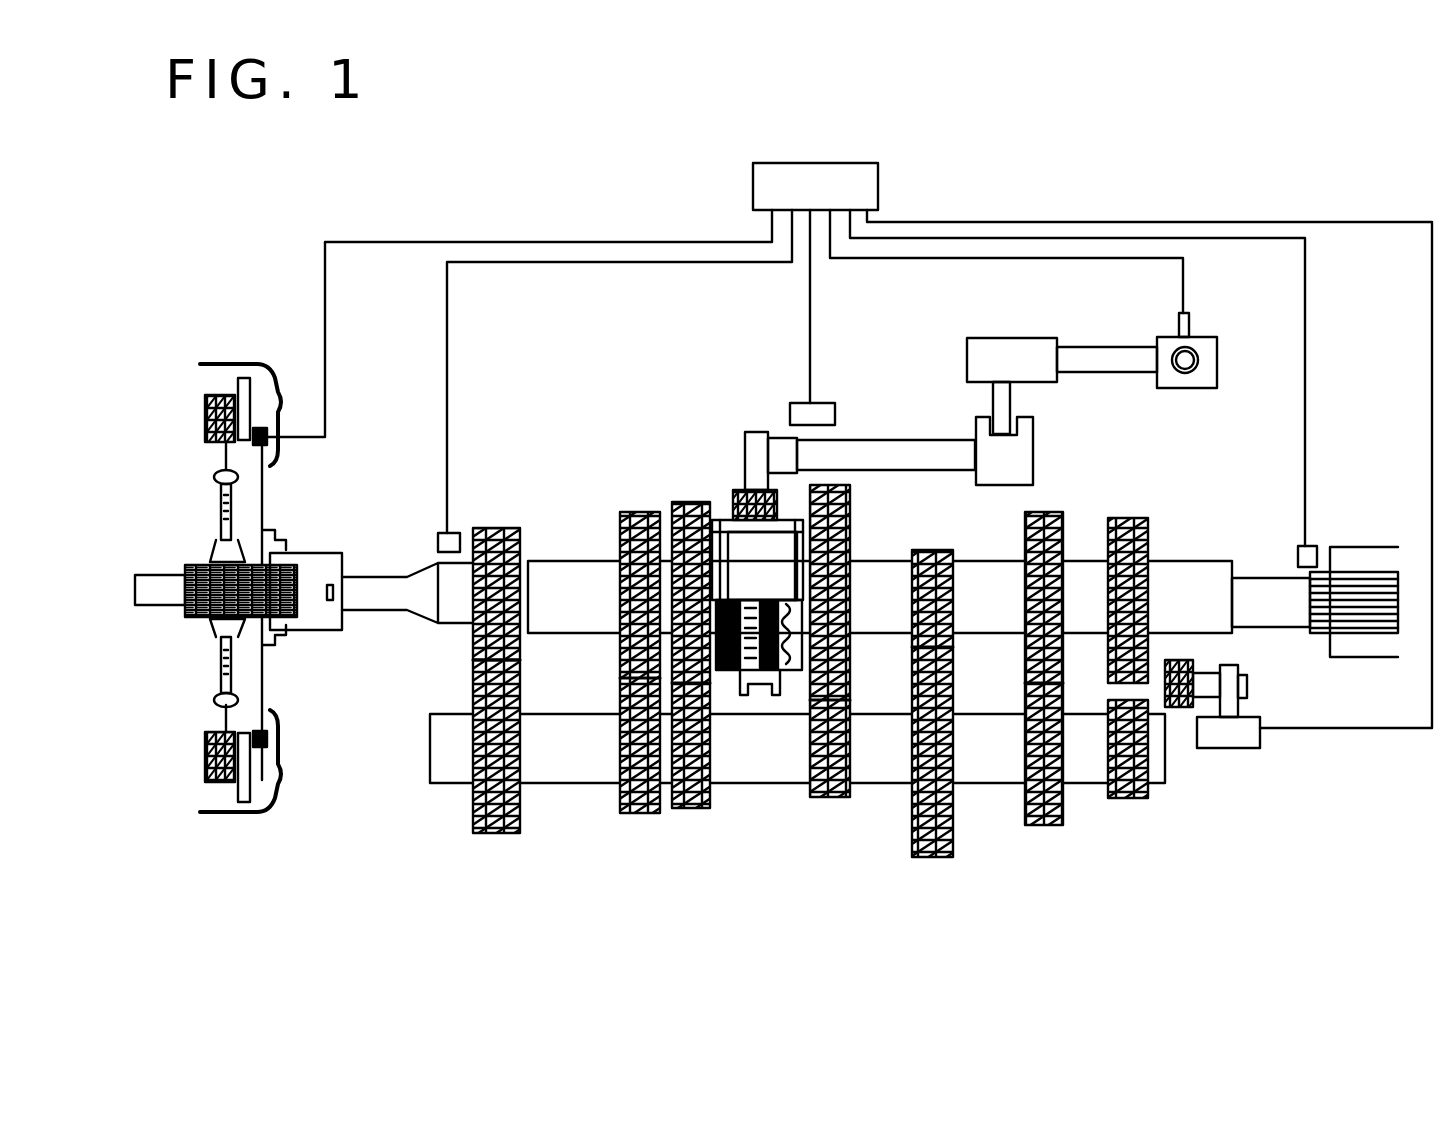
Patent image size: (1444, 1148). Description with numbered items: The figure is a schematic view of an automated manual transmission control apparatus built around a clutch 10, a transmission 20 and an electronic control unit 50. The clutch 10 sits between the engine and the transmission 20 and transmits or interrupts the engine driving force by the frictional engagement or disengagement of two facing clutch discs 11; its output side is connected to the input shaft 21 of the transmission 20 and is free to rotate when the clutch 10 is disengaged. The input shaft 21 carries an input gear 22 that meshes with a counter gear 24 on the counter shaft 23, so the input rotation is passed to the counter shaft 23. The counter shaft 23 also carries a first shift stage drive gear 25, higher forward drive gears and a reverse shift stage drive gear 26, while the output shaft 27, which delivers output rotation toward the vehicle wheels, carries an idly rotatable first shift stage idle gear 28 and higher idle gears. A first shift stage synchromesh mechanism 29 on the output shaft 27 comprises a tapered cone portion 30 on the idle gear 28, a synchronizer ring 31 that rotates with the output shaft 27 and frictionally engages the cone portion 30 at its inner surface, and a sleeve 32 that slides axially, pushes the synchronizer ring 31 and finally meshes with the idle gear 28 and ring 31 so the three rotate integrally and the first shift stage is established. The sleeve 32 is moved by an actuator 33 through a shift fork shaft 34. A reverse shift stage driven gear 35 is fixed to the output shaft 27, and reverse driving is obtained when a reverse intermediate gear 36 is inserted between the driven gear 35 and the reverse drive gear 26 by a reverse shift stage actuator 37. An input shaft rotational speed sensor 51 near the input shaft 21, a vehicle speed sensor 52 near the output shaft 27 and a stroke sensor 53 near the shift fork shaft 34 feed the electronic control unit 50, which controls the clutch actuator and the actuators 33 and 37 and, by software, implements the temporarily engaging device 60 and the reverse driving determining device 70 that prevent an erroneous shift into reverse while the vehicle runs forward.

The clutch 10 is at (232, 336).
The clutch discs 11 is at (195, 391).
The transmission 20 is at (825, 860).
The input shaft 21 is at (365, 590).
The input gear 22 is at (496, 527).
The counter shaft 23 is at (566, 765).
The counter gear 24 is at (472, 805).
The first shift stage drive gear 25 is at (695, 806).
The reverse shift stage drive gear 26 is at (1128, 800).
The output shaft 27 is at (1266, 598).
The first shift stage idle gear 28 is at (660, 512).
The synchromesh mechanism 29 is at (716, 368).
The cone portion 30 is at (715, 512).
The synchronizer ring 31 is at (745, 578).
The sleeve 32 is at (722, 515).
The actuator 33 is at (1183, 386).
The shift fork shaft 34 is at (875, 462).
The reverse shift stage driven gear 35 is at (1130, 520).
The reverse intermediate gear 36 is at (1176, 708).
The reverse shift stage actuator 37 is at (1232, 738).
The electronic control unit 50 is at (866, 178).
The input shaft rotational speed sensor 51 is at (446, 530).
The vehicle speed sensor 52 is at (1312, 555).
The stroke sensor 53 is at (826, 413).
The temporarily engaging device 60 is at (972, 140).
The reverse driving determining device 70 is at (972, 162).